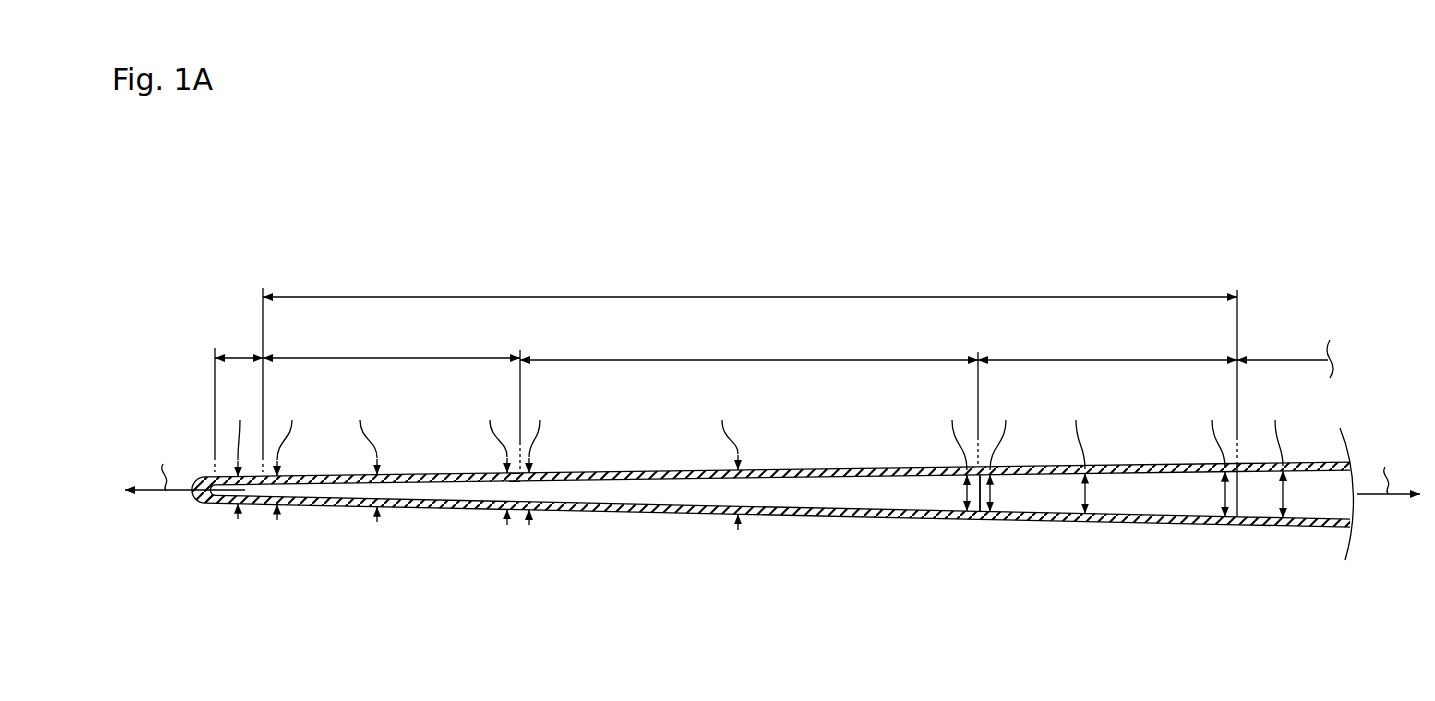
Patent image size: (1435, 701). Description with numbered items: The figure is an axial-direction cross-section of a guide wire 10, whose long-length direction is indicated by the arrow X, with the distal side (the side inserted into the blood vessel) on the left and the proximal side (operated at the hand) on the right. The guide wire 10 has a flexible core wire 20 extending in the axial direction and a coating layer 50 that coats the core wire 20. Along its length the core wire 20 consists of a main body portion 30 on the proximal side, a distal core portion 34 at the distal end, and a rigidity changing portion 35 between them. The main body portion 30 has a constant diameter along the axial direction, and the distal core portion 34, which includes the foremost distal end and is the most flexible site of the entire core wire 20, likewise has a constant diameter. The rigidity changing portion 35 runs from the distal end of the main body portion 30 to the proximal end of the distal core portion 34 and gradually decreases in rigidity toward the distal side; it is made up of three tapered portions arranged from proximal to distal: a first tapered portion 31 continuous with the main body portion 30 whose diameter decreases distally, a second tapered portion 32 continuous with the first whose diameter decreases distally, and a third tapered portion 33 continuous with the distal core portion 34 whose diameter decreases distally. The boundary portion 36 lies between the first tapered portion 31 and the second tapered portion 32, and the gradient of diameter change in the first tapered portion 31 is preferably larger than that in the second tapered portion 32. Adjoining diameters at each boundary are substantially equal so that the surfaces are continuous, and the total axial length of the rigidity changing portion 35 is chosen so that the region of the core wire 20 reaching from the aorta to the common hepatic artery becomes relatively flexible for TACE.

The guide wire 10 is at (289, 176).
The core wire 20 is at (1191, 500).
The main body portion 30 is at (1322, 499).
The first tapered portion 31 is at (1108, 501).
The second tapered portion 32 is at (765, 499).
The third tapered portion 33 is at (398, 503).
The distal core portion 34 is at (226, 506).
The rigidity changing portion 35 is at (385, 630).
The boundary portion 36 is at (981, 518).
The coating layer 50 is at (306, 506).